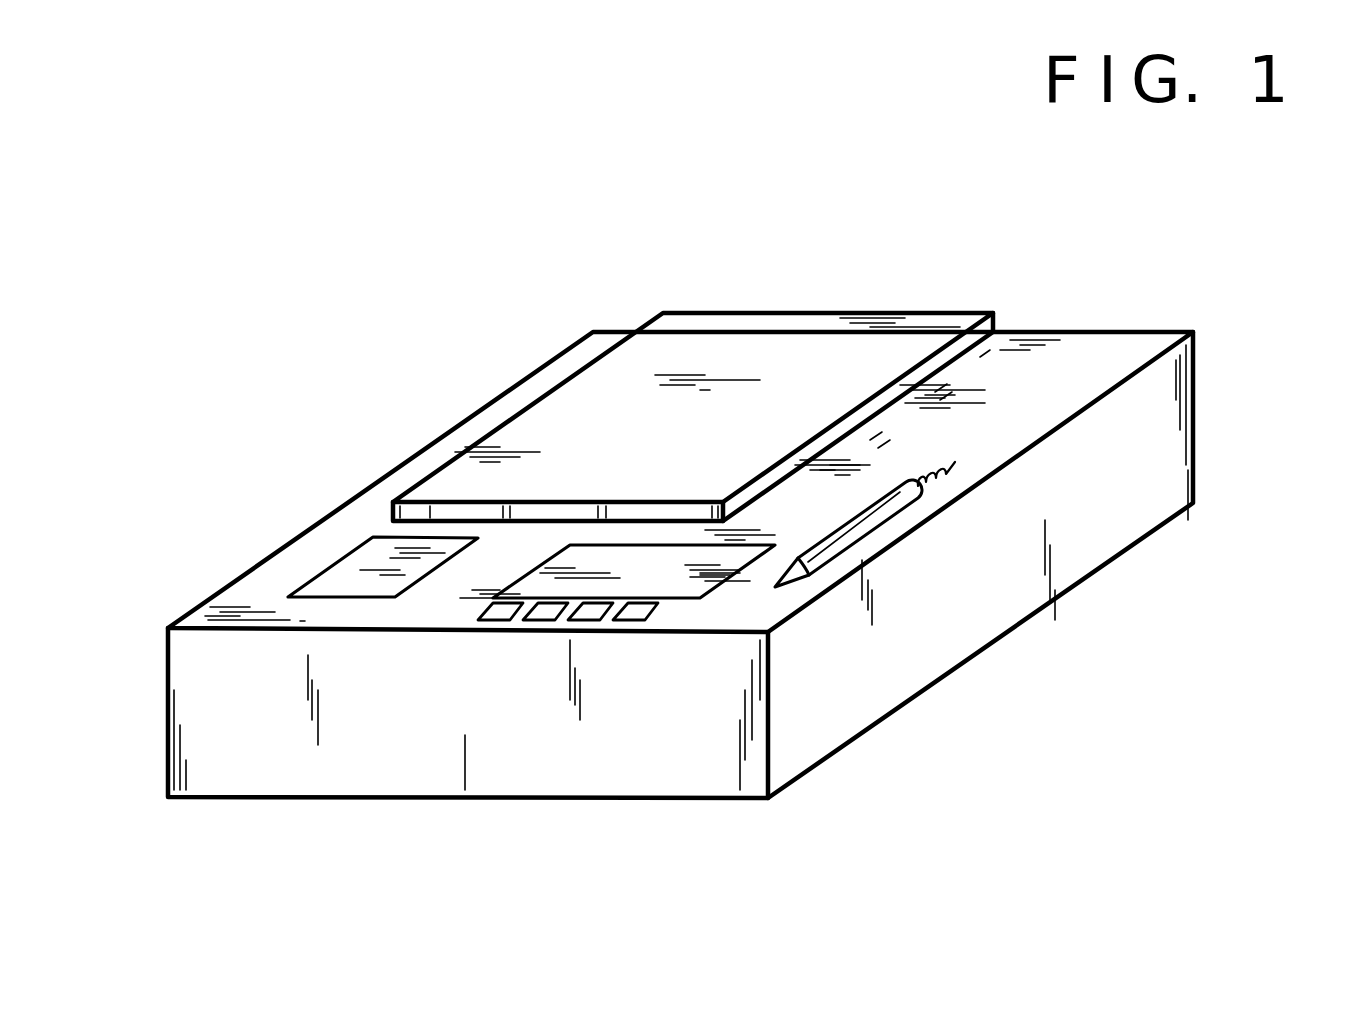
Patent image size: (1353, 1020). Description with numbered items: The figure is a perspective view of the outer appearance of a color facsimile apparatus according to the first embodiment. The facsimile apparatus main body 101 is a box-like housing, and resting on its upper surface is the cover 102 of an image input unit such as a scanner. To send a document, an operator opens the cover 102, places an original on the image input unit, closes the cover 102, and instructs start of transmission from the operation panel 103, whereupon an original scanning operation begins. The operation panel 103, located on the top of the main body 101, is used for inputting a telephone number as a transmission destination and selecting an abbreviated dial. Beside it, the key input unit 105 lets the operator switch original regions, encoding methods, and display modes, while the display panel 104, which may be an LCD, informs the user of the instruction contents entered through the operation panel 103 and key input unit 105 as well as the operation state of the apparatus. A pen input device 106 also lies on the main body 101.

The facsimile apparatus main body 101 is at (1187, 418).
The cover 102 is at (740, 315).
The operation panel 103 is at (353, 570).
The display panel 104 is at (690, 587).
The key input unit 105 is at (548, 620).
The pen input device 106 is at (883, 517).